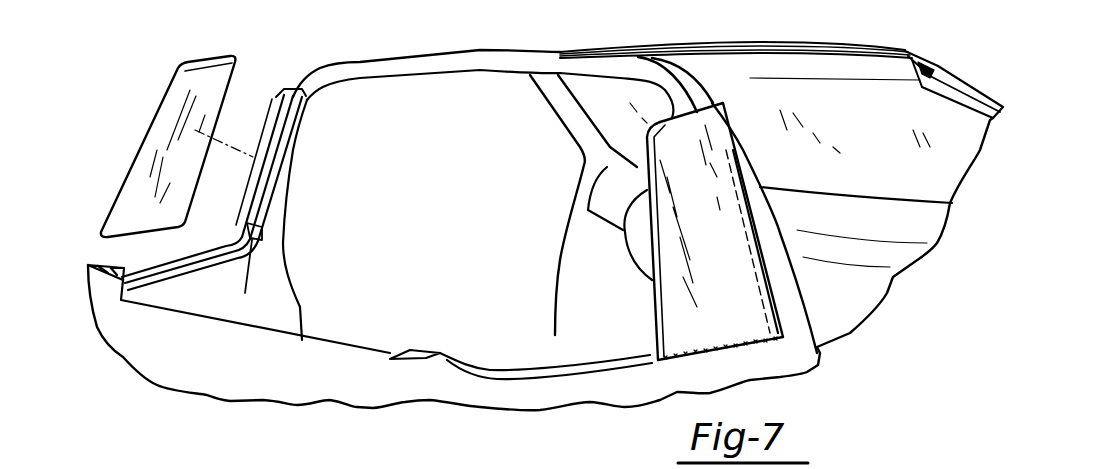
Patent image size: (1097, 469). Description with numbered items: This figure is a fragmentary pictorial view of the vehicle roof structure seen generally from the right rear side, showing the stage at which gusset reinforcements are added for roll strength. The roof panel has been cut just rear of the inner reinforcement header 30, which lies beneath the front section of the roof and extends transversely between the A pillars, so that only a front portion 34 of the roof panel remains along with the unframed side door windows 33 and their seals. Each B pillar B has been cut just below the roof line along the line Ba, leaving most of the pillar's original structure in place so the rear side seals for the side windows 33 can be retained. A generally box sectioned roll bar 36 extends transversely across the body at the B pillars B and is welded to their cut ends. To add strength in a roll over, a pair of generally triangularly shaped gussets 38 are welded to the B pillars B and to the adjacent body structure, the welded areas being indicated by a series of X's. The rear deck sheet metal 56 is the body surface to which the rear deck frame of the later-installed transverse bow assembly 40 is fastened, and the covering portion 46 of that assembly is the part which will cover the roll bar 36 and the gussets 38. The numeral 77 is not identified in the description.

The inner reinforcement header 30 is at (920, 79).
The side door window 33 is at (373, 6).
The front portion of the roof panel 34 is at (909, 55).
The roll bar 36 is at (462, 62).
The gusset 38 is at (180, 67).
The transverse bow (targa) assembly 40 is at (370, 367).
The covering portion 46 is at (540, 293).
The rear deck sheet metal 56 is at (447, 353).
The roof drip rail 77 is at (767, 42).
The B pillar B is at (310, 143).
The cut line on B pillar Ba is at (284, 95).